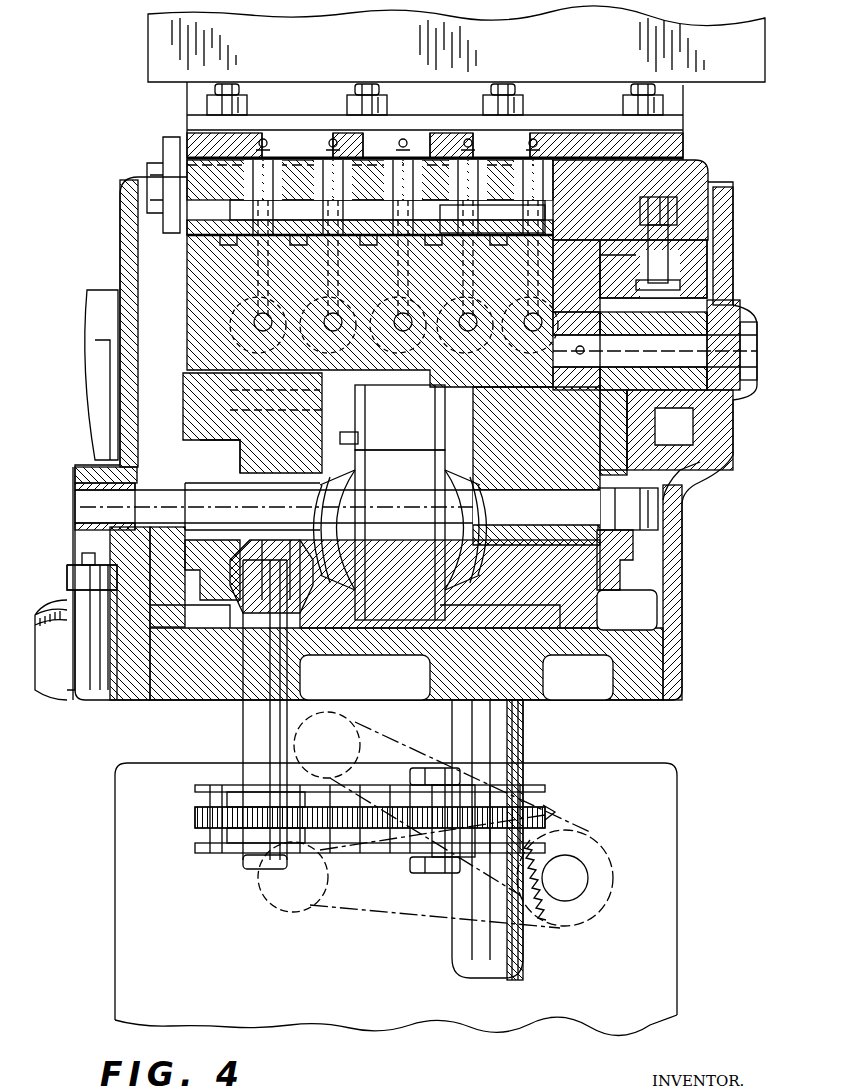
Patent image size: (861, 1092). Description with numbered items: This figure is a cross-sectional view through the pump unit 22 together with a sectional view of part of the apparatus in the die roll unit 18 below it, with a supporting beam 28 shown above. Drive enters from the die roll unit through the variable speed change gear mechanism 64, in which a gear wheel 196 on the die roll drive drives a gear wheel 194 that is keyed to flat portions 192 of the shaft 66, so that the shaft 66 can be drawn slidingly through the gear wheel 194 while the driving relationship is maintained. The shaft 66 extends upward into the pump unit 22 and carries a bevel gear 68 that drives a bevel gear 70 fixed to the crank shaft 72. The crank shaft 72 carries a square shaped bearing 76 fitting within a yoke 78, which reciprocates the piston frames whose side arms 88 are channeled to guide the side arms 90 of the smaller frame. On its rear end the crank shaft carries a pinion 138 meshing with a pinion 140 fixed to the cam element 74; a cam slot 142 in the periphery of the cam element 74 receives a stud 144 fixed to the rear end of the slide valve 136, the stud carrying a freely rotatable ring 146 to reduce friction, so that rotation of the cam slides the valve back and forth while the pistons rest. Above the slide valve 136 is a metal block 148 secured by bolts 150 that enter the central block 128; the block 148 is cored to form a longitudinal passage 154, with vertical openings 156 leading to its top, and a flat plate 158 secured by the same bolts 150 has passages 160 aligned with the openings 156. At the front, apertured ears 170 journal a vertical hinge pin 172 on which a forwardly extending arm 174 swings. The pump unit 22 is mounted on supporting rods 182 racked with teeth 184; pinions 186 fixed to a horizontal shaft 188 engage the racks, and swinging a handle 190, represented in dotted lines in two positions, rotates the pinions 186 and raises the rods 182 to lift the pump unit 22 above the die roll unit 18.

The die roll unit 18 is at (115, 933).
The pump unit 22 is at (673, 615).
The support beam 28 is at (158, 57).
The variable speed change gear mechanism 64 is at (186, 819).
The shaft 66 is at (245, 718).
The bevel gear 68 is at (230, 607).
The bevel gear 70 is at (183, 563).
The crank shaft 72 is at (380, 498).
The cam element 74 is at (697, 420).
The square shaped bearing 76 is at (427, 500).
The yoke 78 is at (420, 410).
The side arms 88 is at (273, 457).
The side arms 90 is at (350, 440).
The central block 128 is at (193, 289).
The slide valve 136 is at (517, 222).
The pinion 138 is at (633, 547).
The pinion 140 is at (627, 410).
The cam slot 142 is at (703, 470).
The stud 144 is at (668, 262).
The freely rotatable ring 146 is at (670, 276).
The metal block 148 is at (700, 182).
The bolts 150 is at (623, 98).
The longitudinal passage 154 is at (333, 210).
The vertical openings 156 is at (277, 168).
The flat plate 158 is at (677, 147).
The passages 160 is at (280, 133).
The apertured ears 170 is at (72, 570).
The vertical hinge pin 172 is at (82, 560).
The arm 174 is at (40, 608).
The supporting rods 182 is at (518, 733).
The teeth 184 is at (523, 950).
The pinions 186 is at (600, 863).
The horizontal shaft 188 is at (578, 885).
The handle 190 is at (413, 913).
The flat portions 192 is at (273, 750).
The gear wheel 194 is at (217, 820).
The gear wheel 196 is at (548, 808).